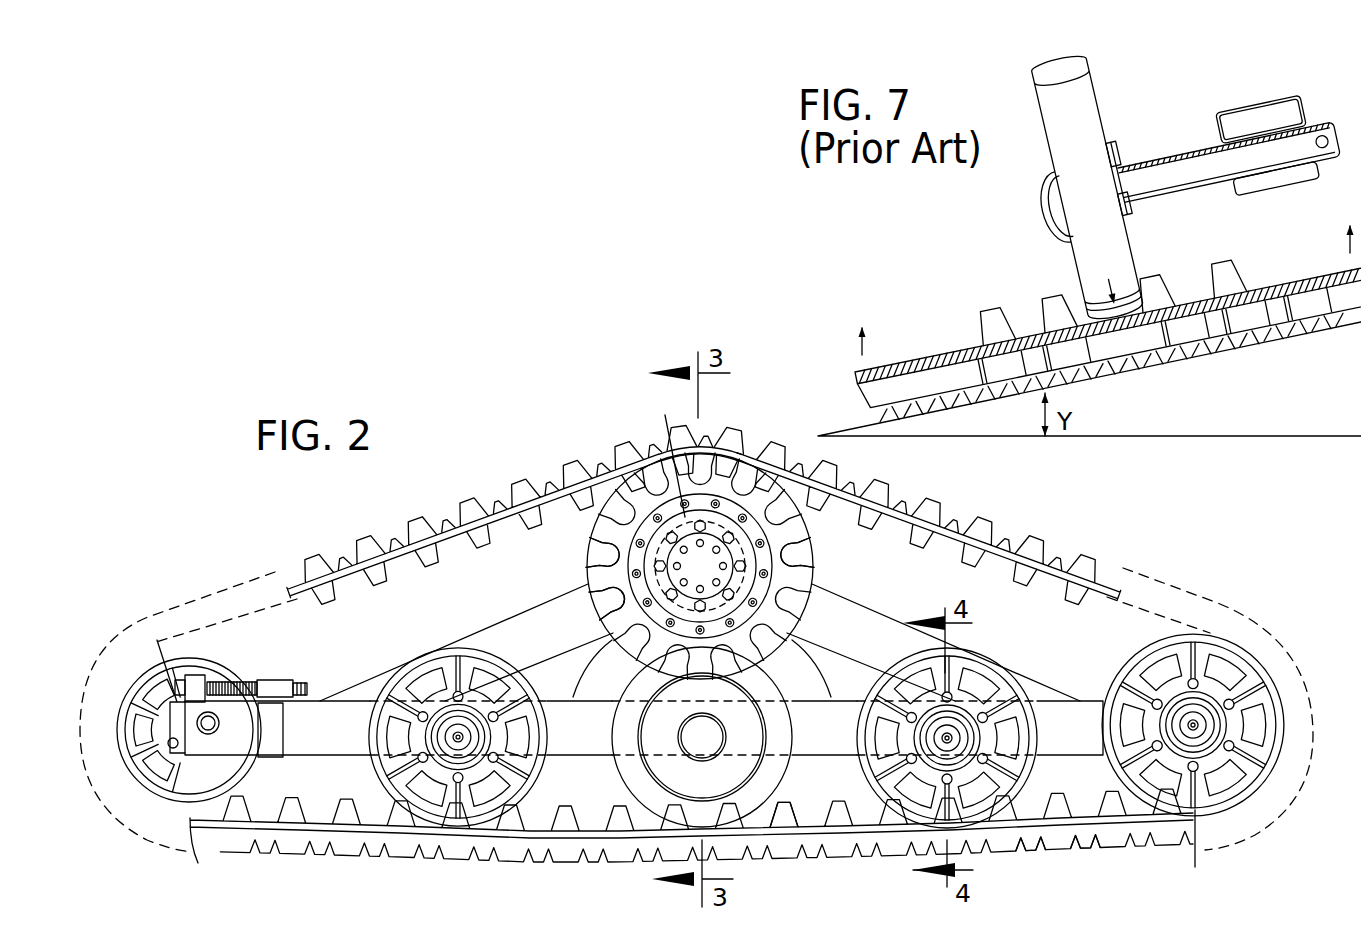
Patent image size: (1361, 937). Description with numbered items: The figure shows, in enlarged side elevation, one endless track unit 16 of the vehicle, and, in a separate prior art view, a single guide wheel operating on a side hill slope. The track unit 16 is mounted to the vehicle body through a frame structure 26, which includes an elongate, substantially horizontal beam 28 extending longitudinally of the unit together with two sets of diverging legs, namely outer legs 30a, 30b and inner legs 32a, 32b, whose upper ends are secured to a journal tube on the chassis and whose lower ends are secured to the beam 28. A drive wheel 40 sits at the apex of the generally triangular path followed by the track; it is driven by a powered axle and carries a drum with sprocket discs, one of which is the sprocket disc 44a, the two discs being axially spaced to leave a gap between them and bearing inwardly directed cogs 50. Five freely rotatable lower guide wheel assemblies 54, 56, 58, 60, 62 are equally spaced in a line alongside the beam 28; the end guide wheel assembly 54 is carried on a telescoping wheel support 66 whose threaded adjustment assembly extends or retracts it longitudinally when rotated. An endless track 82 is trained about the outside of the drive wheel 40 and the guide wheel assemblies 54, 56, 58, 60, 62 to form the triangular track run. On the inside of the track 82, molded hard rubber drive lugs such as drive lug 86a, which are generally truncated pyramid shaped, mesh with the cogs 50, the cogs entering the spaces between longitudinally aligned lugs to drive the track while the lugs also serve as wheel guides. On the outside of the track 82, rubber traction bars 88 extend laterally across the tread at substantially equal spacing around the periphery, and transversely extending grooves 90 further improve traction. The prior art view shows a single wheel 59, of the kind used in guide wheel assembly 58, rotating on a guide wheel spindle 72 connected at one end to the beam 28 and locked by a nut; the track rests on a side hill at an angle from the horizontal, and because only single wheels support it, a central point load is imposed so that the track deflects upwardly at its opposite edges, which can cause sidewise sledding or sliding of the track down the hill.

In FIG. 2, the endless track 82 is at (506, 484).
In FIG. 7, the endless track 82 is at (935, 355).
In FIG. 2, the track unit 16 is at (1180, 532).
In FIG. 2, the drive lug 86a is at (790, 815).
In FIG. 7, the drive lug 86a is at (995, 310).
In FIG. 2, the traction bars 88 is at (1048, 847).
In FIG. 2, the transversely extending grooves 90 is at (1100, 842).
In FIG. 2, the drive wheel 40 is at (800, 537).
In FIG. 2, the cogs 50 is at (585, 587).
In FIG. 2, the sprocket disc 44a is at (797, 580).
In FIG. 2, the beam 28 is at (590, 750).
In FIG. 7, the beam 28 is at (1272, 100).
In FIG. 2, the frame structure 26 is at (478, 623).
In FIG. 2, the outer leg 30a is at (513, 633).
In FIG. 2, the outer leg 30b is at (830, 600).
In FIG. 2, the inner leg 32a is at (610, 648).
In FIG. 2, the inner leg 32b is at (840, 640).
In FIG. 2, the guide wheel assembly 58 is at (748, 807).
In FIG. 2, the guide wheel assembly 56 is at (410, 658).
In FIG. 2, the guide wheel assembly 60 is at (1018, 687).
In FIG. 2, the guide wheel assembly 62 is at (1132, 657).
In FIG. 2, the guide wheel assembly 54 is at (162, 785).
In FIG. 2, the telescoping wheel support 66 is at (237, 678).
In FIG. 7, the wheel 59 is at (1075, 93).
In FIG. 7, the guide wheel spindle 72 is at (1163, 157).